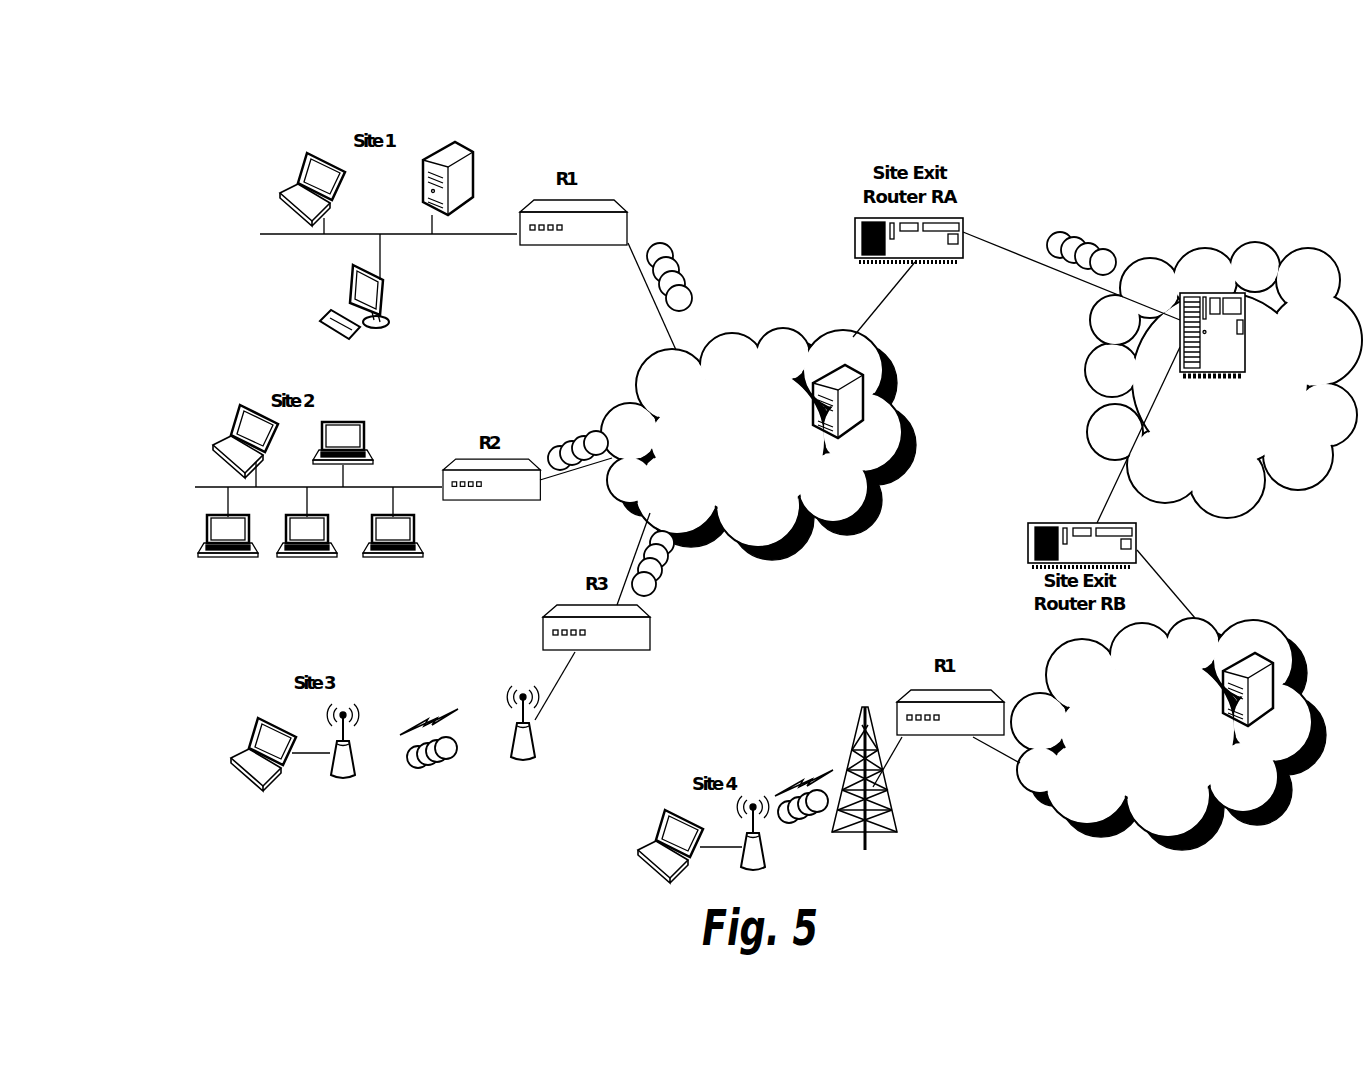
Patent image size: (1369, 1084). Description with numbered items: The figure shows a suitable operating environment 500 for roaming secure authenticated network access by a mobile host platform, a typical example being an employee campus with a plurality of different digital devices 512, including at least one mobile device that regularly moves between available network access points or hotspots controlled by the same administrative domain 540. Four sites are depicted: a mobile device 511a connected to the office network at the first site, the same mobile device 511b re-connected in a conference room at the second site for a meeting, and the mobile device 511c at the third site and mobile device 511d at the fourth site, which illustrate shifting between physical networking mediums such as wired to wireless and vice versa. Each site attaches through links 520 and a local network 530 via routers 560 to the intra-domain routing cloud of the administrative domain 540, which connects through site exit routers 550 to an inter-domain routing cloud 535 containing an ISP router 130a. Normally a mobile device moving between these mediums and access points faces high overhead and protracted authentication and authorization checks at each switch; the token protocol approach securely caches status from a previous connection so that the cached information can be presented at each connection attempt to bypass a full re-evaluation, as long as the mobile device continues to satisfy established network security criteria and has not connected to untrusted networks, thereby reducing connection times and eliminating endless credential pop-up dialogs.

The operating environment 500 is at (748, 181).
The mobile device at Site 1 511a is at (300, 172).
The mobile device at Site 2 511b is at (232, 426).
The mobile device at Site 3 511c is at (243, 748).
The mobile device at Site 4 511d is at (652, 838).
The digital devices 512 is at (448, 146).
The communication links 520 is at (681, 270).
The local area network bus 530 is at (468, 235).
The inter-domain routing domain 535 is at (1215, 476).
The administrative domain 540 is at (722, 479).
The site exit router 550 is at (855, 232).
The router 560 is at (560, 246).
The ISP router 130a is at (1247, 328).